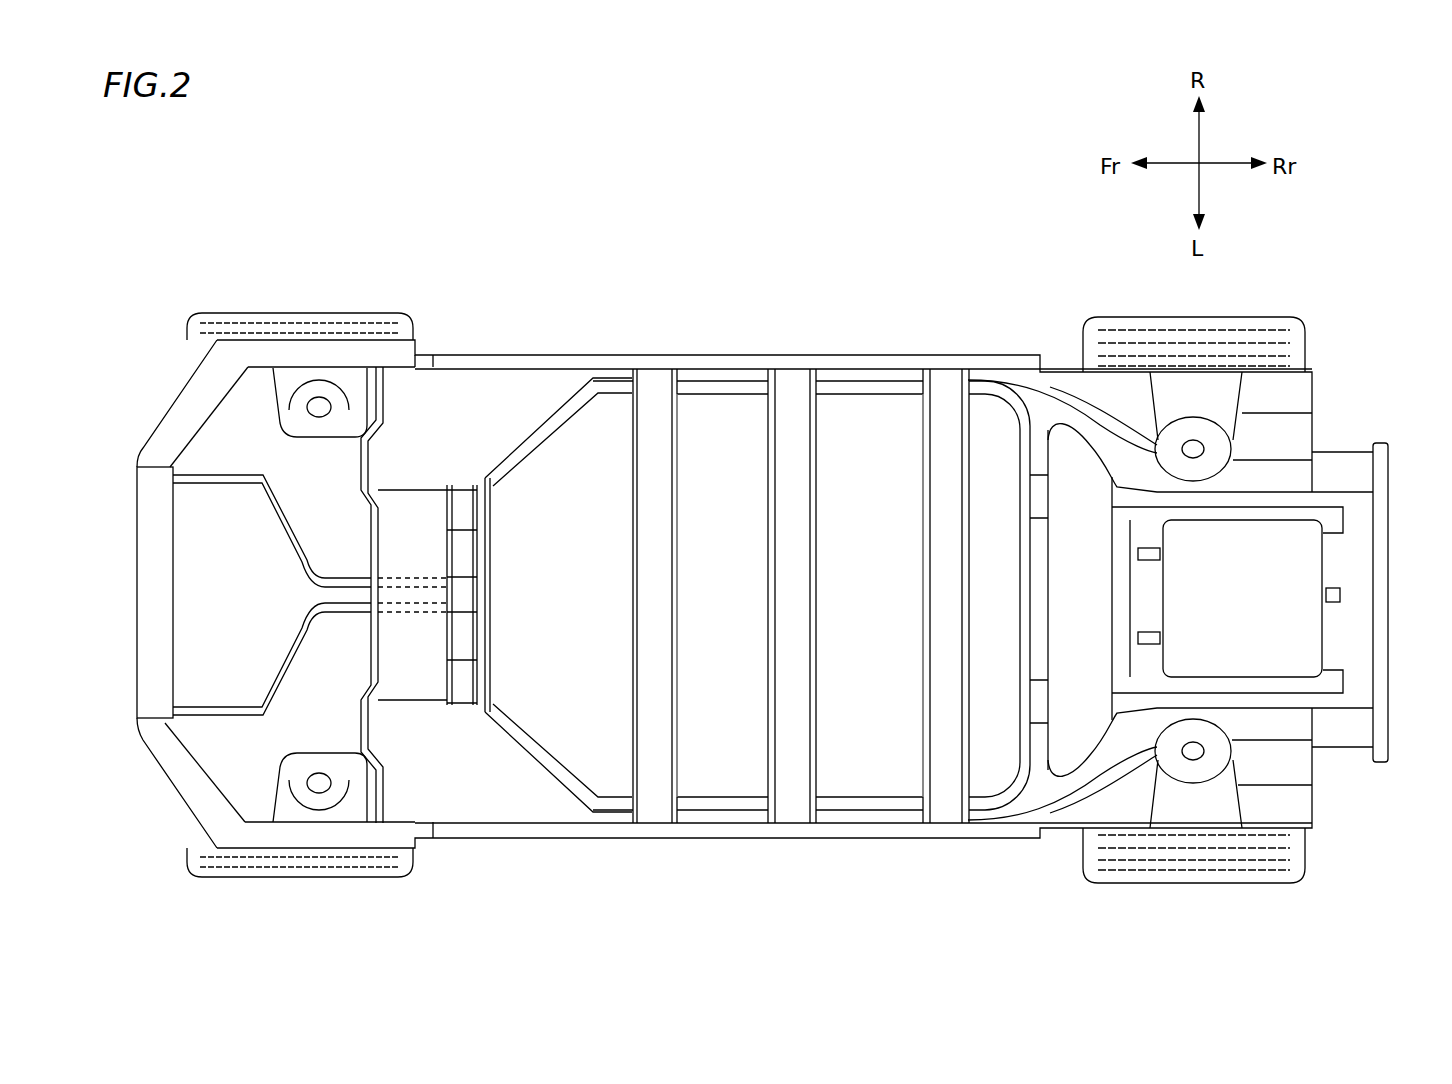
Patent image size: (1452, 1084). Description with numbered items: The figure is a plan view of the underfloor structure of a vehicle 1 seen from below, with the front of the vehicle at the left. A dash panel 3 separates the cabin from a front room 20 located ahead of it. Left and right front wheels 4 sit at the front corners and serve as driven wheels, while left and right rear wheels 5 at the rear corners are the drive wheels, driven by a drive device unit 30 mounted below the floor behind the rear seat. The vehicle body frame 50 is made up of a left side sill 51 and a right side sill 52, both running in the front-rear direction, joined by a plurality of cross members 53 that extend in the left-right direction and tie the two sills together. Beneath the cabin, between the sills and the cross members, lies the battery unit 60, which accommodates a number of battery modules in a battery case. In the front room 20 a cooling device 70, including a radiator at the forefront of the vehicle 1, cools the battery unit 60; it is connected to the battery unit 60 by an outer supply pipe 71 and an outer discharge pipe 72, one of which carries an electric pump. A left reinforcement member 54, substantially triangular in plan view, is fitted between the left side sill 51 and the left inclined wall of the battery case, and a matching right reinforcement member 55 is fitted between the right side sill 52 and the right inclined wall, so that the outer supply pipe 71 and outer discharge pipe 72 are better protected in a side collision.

The vehicle 1 is at (818, 250).
The dash panel 3 is at (410, 533).
The front wheels 4 is at (342, 312).
The rear wheels 5 is at (1233, 317).
The front room 20 is at (232, 616).
The drive device unit 30 is at (1267, 592).
The vehicle body frame 50 is at (900, 355).
The left side sill 51 is at (835, 355).
The right side sill 52 is at (858, 838).
The cross members 53 is at (470, 490).
The left reinforcement member 54 is at (478, 785).
The right reinforcement member 55 is at (528, 400).
The battery unit 60 is at (721, 468).
The cooling device 70 is at (137, 597).
The outer supply pipe 71 is at (210, 713).
The outer discharge pipe 72 is at (200, 475).